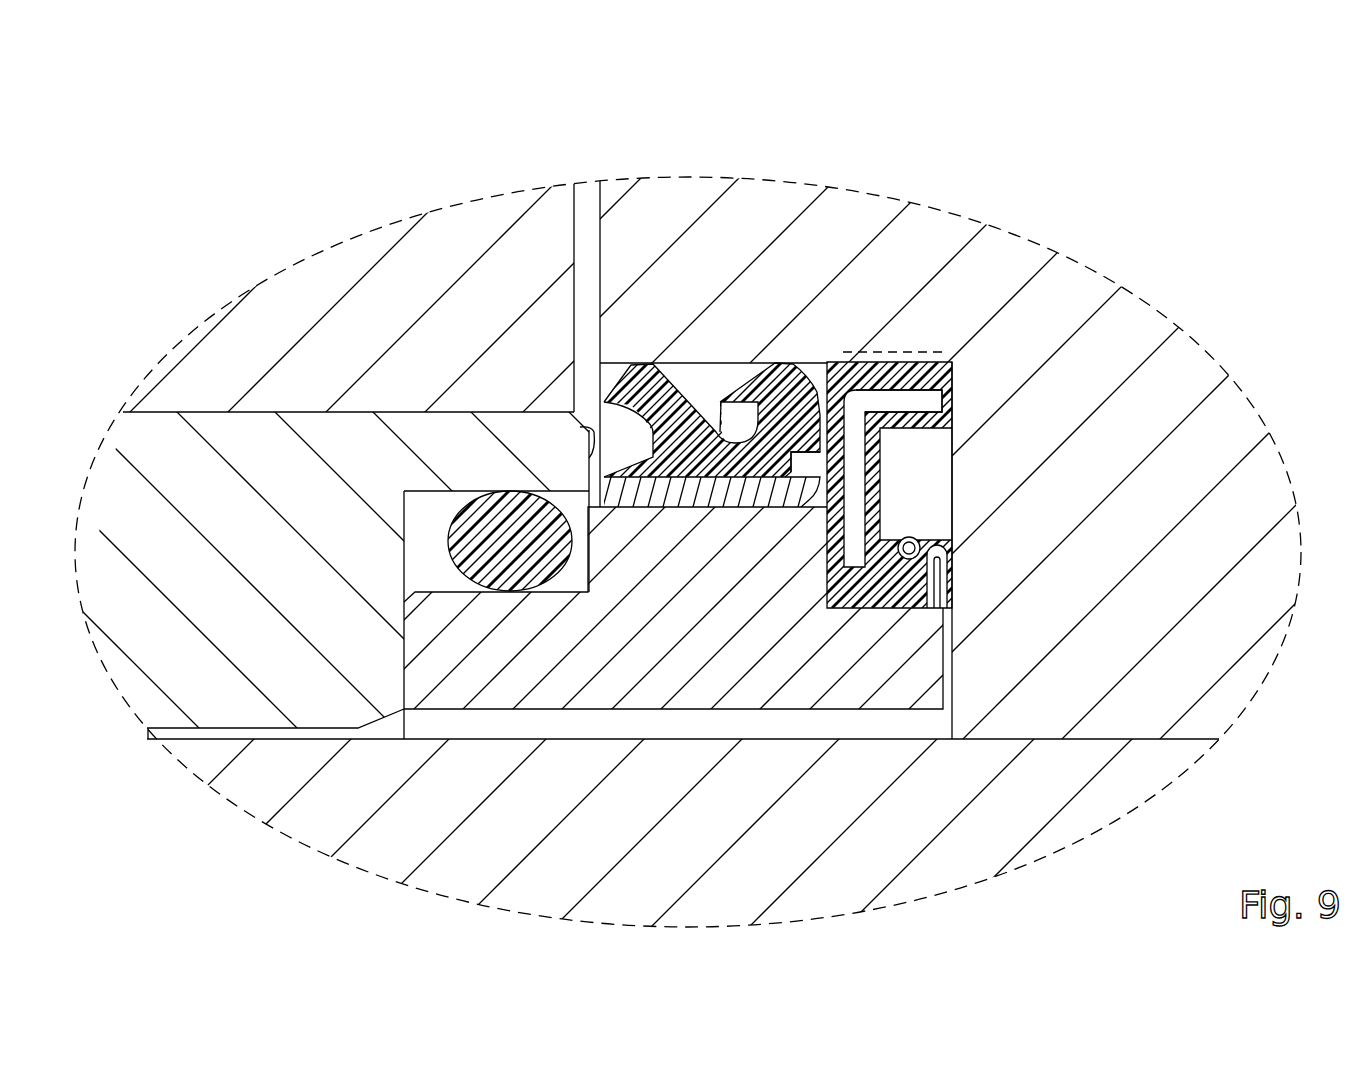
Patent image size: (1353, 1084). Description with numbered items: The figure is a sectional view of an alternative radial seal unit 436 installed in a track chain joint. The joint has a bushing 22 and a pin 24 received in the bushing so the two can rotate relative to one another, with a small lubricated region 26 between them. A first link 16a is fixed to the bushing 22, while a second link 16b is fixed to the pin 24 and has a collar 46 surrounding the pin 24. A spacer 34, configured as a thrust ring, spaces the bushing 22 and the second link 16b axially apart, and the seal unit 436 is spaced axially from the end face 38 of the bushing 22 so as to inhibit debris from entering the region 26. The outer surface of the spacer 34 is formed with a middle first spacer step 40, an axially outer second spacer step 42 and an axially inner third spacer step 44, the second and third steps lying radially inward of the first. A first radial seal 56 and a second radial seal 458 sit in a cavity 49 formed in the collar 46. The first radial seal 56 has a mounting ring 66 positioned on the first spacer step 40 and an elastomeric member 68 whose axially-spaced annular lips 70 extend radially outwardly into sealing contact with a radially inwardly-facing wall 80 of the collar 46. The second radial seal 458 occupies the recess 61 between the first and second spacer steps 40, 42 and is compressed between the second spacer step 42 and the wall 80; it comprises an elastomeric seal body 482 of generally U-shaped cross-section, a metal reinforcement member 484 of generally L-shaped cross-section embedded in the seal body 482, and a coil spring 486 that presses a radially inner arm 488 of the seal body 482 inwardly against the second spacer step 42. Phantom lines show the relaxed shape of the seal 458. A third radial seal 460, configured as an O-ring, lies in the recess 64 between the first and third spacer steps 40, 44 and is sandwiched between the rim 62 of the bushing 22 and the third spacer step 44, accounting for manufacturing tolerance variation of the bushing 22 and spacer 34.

The first link 16a is at (315, 282).
The second link 16b is at (924, 240).
The bushing 22 is at (112, 486).
The pin 24 is at (370, 857).
The region 26 is at (216, 732).
The spacer 34 is at (645, 703).
The end face 38 is at (580, 427).
The first spacer step 40 is at (707, 513).
The second spacer step 42 is at (945, 628).
The third spacer step 44 is at (492, 588).
The collar 46 is at (1132, 328).
The cavity 49 is at (948, 492).
The first radial seal 56 is at (704, 390).
The recess 61 is at (868, 612).
The rim 62 is at (592, 455).
The recess 64 is at (588, 470).
The mounting ring 66 is at (648, 492).
The elastomeric member 68 is at (789, 410).
The annular lips 70 is at (645, 378).
The radially inwardly-facing wall 80 is at (843, 372).
The radial seal unit 436 is at (578, 110).
The second radial seal 458 is at (977, 553).
The third radial seal 460 is at (431, 537).
The seal body 482 is at (927, 352).
The reinforcement member 484 is at (902, 398).
The spring 486 is at (921, 547).
The radially inner arm 488 is at (948, 600).